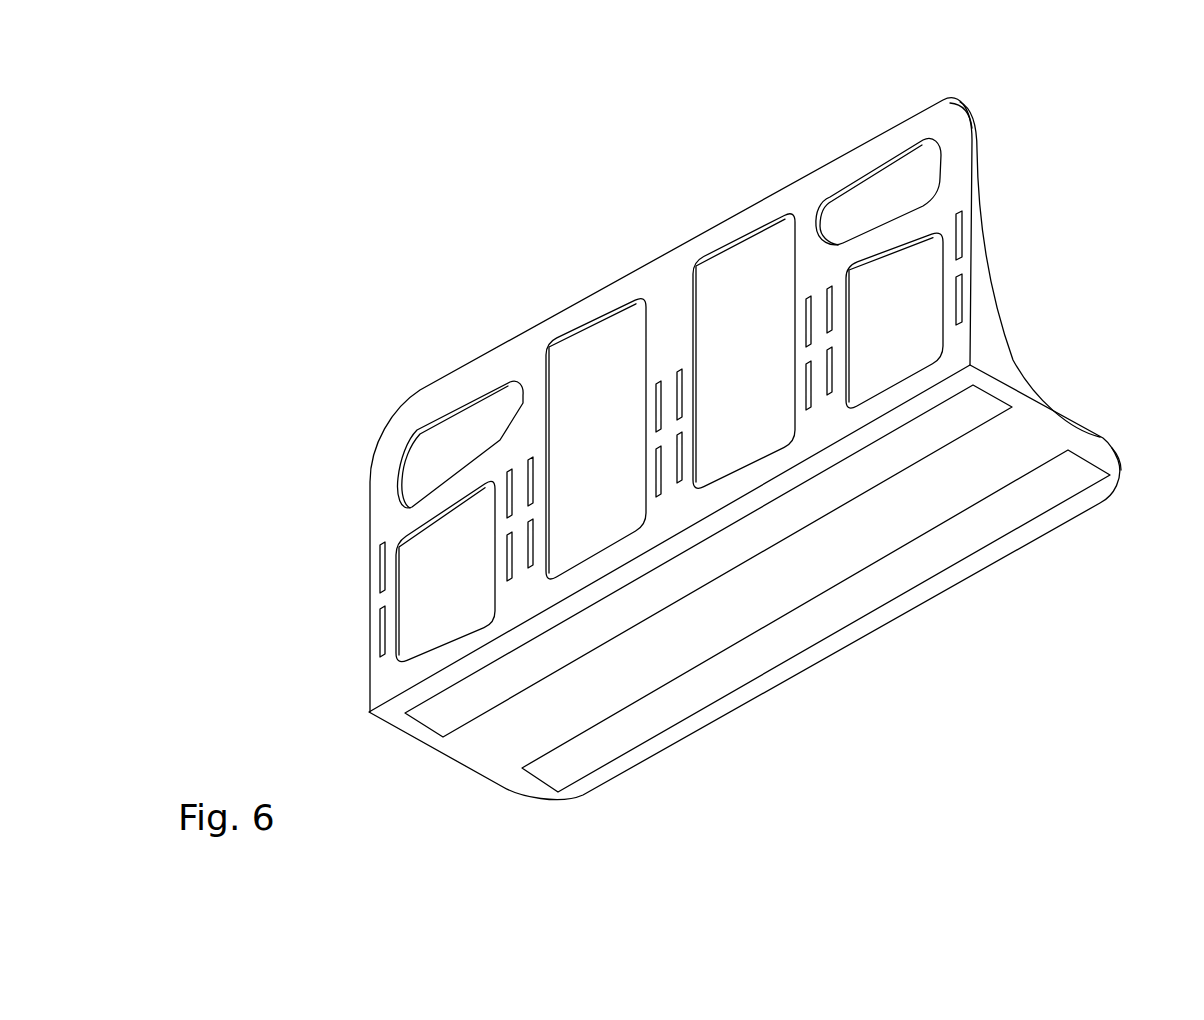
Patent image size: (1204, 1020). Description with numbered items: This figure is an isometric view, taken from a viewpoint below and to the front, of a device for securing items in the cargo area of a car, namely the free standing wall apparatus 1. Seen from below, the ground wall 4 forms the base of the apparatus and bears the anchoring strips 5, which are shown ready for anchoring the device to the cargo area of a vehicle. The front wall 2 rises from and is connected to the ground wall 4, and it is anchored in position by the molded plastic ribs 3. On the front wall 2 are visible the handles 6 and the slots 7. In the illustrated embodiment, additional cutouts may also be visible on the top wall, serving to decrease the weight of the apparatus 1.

The free standing wall apparatus 1 is at (258, 530).
The front wall 2 is at (670, 283).
The molded plastic ribs 3 is at (983, 347).
The ground wall 4 is at (835, 548).
The anchoring strips 5 is at (614, 611).
The handles 6 is at (883, 197).
The slots 7 is at (957, 232).